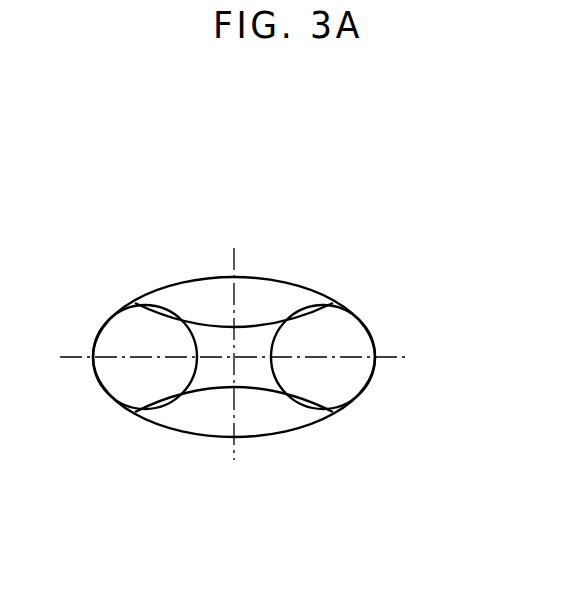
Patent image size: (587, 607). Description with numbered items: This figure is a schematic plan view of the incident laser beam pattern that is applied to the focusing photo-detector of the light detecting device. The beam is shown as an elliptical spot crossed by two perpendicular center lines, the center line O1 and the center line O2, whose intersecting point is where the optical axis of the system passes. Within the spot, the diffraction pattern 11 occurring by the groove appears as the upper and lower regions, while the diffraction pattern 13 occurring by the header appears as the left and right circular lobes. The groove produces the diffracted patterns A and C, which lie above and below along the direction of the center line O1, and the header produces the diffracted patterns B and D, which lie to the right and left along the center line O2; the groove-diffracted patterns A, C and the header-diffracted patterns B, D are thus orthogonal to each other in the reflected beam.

The diffraction pattern by the groove 11 is at (257, 404).
The diffraction pattern by the header 13 is at (156, 382).
The center line O1 is at (230, 318).
The center line O2 is at (134, 362).
The diffracted pattern by the groove A is at (293, 297).
The diffracted pattern by the header B is at (355, 370).
The diffracted pattern by the groove C is at (245, 428).
The diffracted pattern by the header D is at (113, 327).